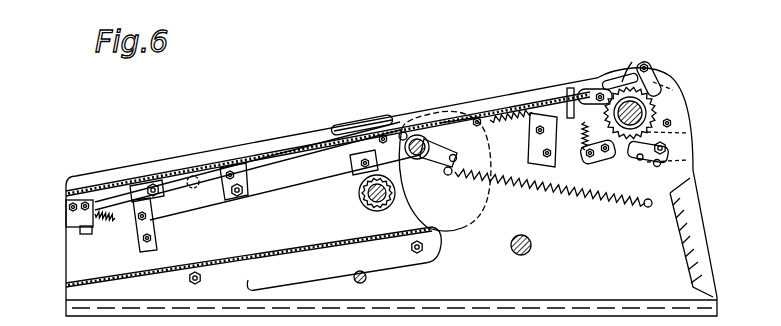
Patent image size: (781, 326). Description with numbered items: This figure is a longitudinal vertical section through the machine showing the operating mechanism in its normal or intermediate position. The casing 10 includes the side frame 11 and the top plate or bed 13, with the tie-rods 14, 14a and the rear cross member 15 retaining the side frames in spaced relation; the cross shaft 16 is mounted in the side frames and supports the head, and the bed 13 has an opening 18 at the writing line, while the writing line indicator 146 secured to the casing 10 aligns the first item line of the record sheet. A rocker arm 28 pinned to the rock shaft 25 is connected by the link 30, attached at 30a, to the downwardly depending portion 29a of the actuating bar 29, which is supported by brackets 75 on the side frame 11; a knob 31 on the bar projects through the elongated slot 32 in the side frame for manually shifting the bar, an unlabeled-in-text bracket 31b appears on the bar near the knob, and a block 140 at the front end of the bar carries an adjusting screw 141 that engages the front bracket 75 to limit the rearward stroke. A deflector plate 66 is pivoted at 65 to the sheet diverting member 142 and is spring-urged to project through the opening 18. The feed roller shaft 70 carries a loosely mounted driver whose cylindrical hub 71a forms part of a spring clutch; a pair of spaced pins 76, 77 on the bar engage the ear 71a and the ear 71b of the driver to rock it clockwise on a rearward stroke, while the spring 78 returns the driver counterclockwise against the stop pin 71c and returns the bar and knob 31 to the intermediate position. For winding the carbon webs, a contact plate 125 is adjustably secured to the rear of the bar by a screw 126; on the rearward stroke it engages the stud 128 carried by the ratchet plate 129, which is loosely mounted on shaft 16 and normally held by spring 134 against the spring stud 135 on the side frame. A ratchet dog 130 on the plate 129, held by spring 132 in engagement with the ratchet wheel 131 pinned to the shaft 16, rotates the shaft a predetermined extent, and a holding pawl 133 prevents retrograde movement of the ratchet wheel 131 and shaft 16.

The casing 10 is at (67, 293).
The side frame 11 is at (628, 273).
The top plate or bed 13 is at (122, 176).
The tie-rod 14 is at (367, 279).
The tie-rod 14a is at (529, 255).
The rear cross member 15 is at (700, 229).
The cross shaft 16 is at (670, 95).
The opening 18 is at (345, 123).
The rock shaft 25 is at (390, 202).
The rocker arm 28 is at (361, 190).
The actuating bar 29 is at (270, 163).
The downwardly depending portion 29a is at (240, 197).
The link 30 is at (308, 182).
The connection point 30a is at (360, 167).
The knob 31 is at (160, 183).
The bracket 31b is at (217, 188).
The elongated slot 32 is at (195, 176).
The pivot 65 is at (490, 140).
The plate 66 is at (440, 123).
The cross shaft 70 is at (417, 135).
The cylindrical hub 71a is at (414, 162).
The ear 71b is at (432, 227).
The stop pin 71c is at (456, 159).
The bracket 75 is at (545, 178).
The pin 76 is at (402, 128).
The pin 77 is at (382, 134).
The spring 78 is at (589, 197).
The contact plate 125 is at (632, 60).
The screw 126 is at (597, 89).
The stud 128 is at (646, 66).
The ratchet plate 129 is at (643, 117).
The ratchet dog 130 is at (666, 148).
The ratchet wheel 131 is at (612, 78).
The spring 132 is at (657, 167).
The holding pawl 133 is at (592, 160).
The spring 134 is at (664, 133).
The spring stud 135 is at (671, 122).
The block 140 is at (79, 230).
The adjusting screw 141 is at (65, 221).
The sheet diverting member 142 is at (107, 280).
The writing line indicator 146 is at (340, 128).